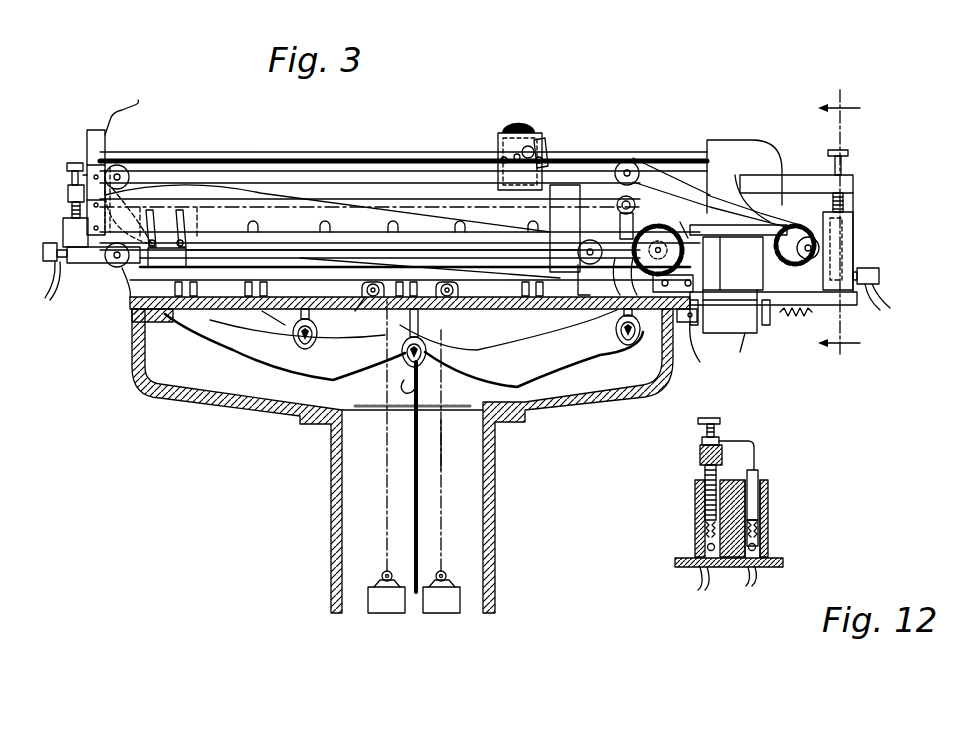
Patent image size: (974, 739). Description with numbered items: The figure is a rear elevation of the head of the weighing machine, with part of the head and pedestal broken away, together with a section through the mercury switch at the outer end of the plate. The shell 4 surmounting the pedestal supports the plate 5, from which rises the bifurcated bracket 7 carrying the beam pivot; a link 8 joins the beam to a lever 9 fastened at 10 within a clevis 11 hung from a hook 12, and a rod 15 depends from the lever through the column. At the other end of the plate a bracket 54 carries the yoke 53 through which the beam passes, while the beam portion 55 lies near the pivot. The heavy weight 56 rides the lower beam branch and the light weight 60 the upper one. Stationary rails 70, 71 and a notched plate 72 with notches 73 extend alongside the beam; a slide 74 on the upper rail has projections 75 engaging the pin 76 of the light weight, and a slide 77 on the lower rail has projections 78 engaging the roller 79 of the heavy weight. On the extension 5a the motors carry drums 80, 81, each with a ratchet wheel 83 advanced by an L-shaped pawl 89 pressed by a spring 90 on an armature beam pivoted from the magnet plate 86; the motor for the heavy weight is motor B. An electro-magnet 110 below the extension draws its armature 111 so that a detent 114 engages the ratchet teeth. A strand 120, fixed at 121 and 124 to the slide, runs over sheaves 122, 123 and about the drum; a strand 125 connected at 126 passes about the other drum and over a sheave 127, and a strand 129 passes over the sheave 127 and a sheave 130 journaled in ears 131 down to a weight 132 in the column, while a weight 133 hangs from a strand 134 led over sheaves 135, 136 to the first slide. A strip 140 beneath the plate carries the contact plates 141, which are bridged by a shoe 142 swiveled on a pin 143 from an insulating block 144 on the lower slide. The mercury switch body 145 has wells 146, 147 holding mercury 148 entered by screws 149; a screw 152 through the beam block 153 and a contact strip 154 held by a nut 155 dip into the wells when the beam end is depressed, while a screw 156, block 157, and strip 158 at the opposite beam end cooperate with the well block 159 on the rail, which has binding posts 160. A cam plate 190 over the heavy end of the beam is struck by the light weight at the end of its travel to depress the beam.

In FIG. 3, the shell 4 is at (402, 461).
In FIG. 3, the plate 5 is at (222, 311).
In FIG. 3, the extension of the plate 5a is at (773, 309).
In FIG. 3, the bifurcated bracket 7 is at (584, 278).
In FIG. 3, the link 8 is at (619, 276).
In FIG. 3, the lever 9 is at (560, 340).
In FIG. 3, the fastening point 10 is at (617, 333).
In FIG. 3, the clevis 11 is at (293, 337).
In FIG. 3, the hook 12 is at (839, 224).
In FIG. 3, the rod 15 is at (425, 385).
In FIG. 3, the loop or yoke 53 is at (90, 140).
In FIG. 3, the bracket 54 is at (132, 314).
In FIG. 3, the portion of the beam 55 is at (744, 176).
In FIG. 3, the heavy weight 56 is at (178, 185).
In FIG. 3, the light weight 60 is at (532, 128).
In FIG. 3, the stationary rail 70 is at (334, 152).
In FIG. 3, the stationary rail 71 is at (340, 249).
In FIG. 3, the plate 72 is at (450, 197).
In FIG. 3, the notches 73 is at (318, 224).
In FIG. 3, the slide 74 is at (495, 175).
In FIG. 3, the projections 75 is at (548, 150).
In FIG. 3, the pin 76 is at (516, 154).
In FIG. 3, the slide 77 is at (187, 252).
In FIG. 3, the projections 78 is at (185, 238).
In FIG. 3, the roller 79 is at (162, 227).
In FIG. 3, the drum 80 is at (820, 244).
In FIG. 3, the drum 81 is at (679, 223).
In FIG. 3, the ratchet wheel 83 is at (805, 216).
In FIG. 3, the plate 86 is at (738, 257).
In FIG. 3, the L-shaped pawl 89 is at (715, 193).
In FIG. 3, the spring 90 is at (745, 190).
In FIG. 3, the electro-magnet 110 is at (730, 316).
In FIG. 3, the armature 111 is at (707, 346).
In FIG. 3, the detent 114 is at (711, 330).
In FIG. 3, the strand 120 is at (270, 144).
In FIG. 3, the attachment point 121 is at (520, 161).
In FIG. 3, the sheave 122 is at (655, 158).
In FIG. 3, the sheave 123 is at (122, 165).
In FIG. 3, the attachment point 124 is at (502, 158).
In FIG. 3, the strand 125 is at (400, 249).
In FIG. 3, the connection point 126 is at (150, 238).
In FIG. 3, the sheave 127 is at (110, 262).
In FIG. 3, the strand 129 is at (288, 270).
In FIG. 3, the sheave 130 is at (415, 279).
In FIG. 3, the ears 131 is at (355, 314).
In FIG. 3, the weight 132 is at (386, 471).
In FIG. 3, the weight 133 is at (443, 486).
In FIG. 3, the strand 134 is at (443, 500).
In FIG. 3, the sheave 135 is at (430, 277).
In FIG. 3, the sheave 136 is at (577, 252).
In FIG. 3, the bracket 140 is at (285, 322).
In FIG. 3, the contact points or plates 141 is at (360, 286).
In FIG. 3, the contact shoe 142 is at (240, 300).
In FIG. 3, the pin 143 is at (128, 290).
In FIG. 3, the block of insulating material 144 is at (166, 238).
In FIG. 3, the body of insulating material 145 is at (853, 250).
In FIG. 12, the body of insulating material 145 is at (766, 514).
In FIG. 12, the well 146 is at (695, 493).
In FIG. 12, the well 147 is at (760, 496).
In FIG. 12, the mercury 148 is at (705, 530).
In FIG. 3, the screw 149 is at (860, 265).
In FIG. 12, the screw 149 is at (760, 540).
In FIG. 3, the screw 152 is at (848, 160).
In FIG. 12, the screw 152 is at (722, 424).
In FIG. 3, the block of insulating material 153 is at (796, 233).
In FIG. 12, the block of insulating material 153 is at (698, 457).
In FIG. 3, the contact strip 154 is at (67, 175).
In FIG. 12, the contact strip 154 is at (756, 468).
In FIG. 3, the nut 155 is at (845, 172).
In FIG. 12, the nut 155 is at (722, 440).
In FIG. 3, the screw 156 is at (72, 163).
In FIG. 3, the block of insulating material 157 is at (68, 190).
In FIG. 3, the contact strip 158 is at (72, 208).
In FIG. 12, the contact strip 158 is at (710, 492).
In FIG. 3, the block of insulating material 159 is at (63, 226).
In FIG. 12, the block of insulating material 159 is at (705, 548).
In FIG. 3, the binding post 160 is at (43, 248).
In FIG. 3, the cam plate 190 is at (140, 104).
In FIG. 3, the motor B is at (730, 287).